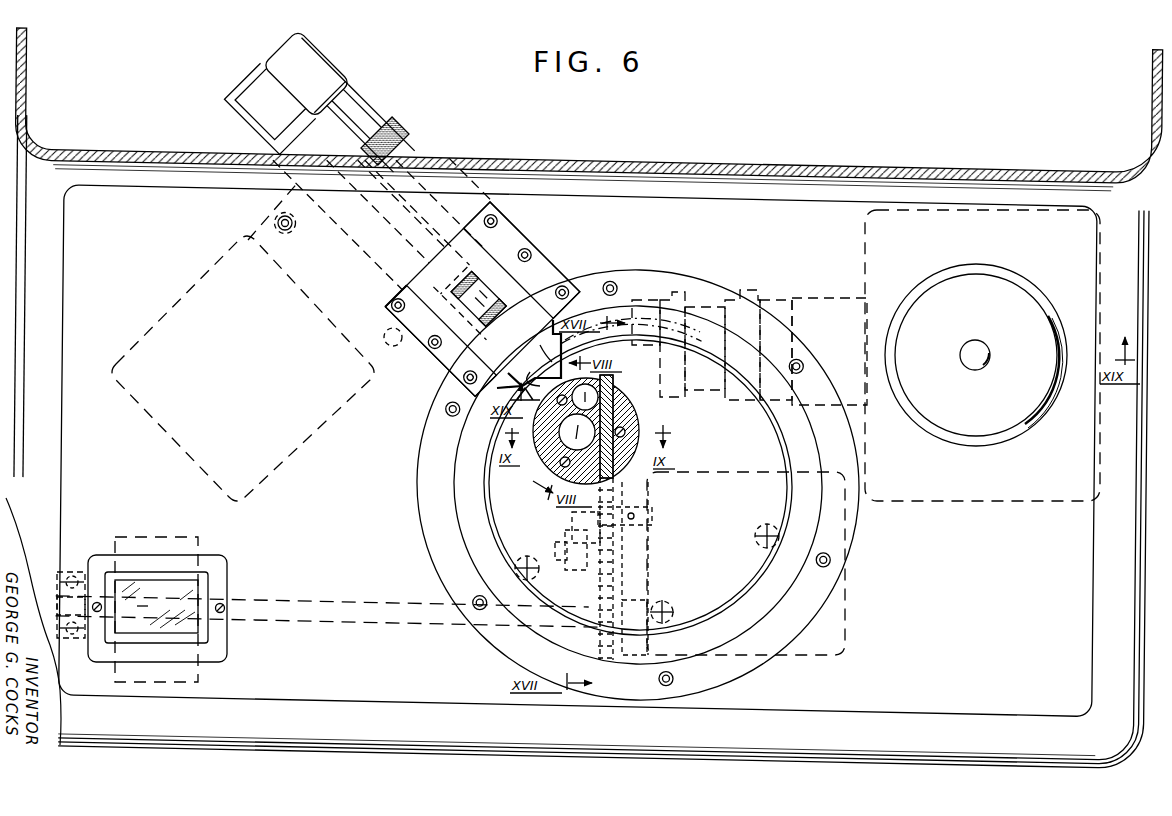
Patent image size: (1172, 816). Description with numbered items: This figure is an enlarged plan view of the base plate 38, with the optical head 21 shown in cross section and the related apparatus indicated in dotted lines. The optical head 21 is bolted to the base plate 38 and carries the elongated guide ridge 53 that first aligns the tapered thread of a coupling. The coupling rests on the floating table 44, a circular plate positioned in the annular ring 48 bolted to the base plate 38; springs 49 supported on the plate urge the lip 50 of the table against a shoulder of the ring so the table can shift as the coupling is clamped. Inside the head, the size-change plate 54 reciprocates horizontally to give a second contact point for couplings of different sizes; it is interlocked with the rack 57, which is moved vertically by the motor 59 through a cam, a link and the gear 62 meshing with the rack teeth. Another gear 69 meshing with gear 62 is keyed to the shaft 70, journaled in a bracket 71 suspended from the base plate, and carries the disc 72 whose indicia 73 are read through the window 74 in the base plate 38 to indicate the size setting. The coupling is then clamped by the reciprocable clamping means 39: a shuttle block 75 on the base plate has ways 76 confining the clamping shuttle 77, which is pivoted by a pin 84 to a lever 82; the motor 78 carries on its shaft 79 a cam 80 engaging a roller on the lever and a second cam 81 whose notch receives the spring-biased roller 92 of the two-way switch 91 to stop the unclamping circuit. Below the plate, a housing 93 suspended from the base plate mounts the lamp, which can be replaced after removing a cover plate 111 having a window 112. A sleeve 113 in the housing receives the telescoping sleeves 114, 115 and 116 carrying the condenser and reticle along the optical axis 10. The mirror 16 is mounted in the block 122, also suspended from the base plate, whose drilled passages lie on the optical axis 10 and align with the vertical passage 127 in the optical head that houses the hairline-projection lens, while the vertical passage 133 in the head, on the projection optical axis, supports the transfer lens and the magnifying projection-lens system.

The optical axis 10 is at (945, 352).
The mirror 16 is at (664, 334).
The optical head 21 is at (625, 472).
The base plate 38 is at (150, 246).
The clamping means 39 is at (381, 299).
The floating table 44 is at (744, 449).
The annular ring 48 is at (770, 606).
The springs 49 is at (524, 557).
The lip 50 is at (800, 456).
The guide ridge 53 is at (540, 380).
The size-change plate 54 is at (604, 384).
The rack 57 is at (614, 418).
The motor 59 is at (847, 617).
The gear 62 is at (617, 561).
The gear 69 is at (598, 588).
The shaft 70 is at (351, 603).
The bracket 71 is at (78, 647).
The disc 72 is at (148, 540).
The indicia 73 is at (182, 592).
The window 74 is at (192, 625).
The shuttle block 75 is at (551, 267).
The ways 76 is at (518, 230).
The clamping shuttle 77 is at (518, 352).
The motor 78 is at (186, 301).
The shaft 79 is at (461, 165).
The cam 80 is at (353, 157).
The second cam 81 is at (418, 160).
The lever 82 is at (503, 311).
The pin 84 is at (458, 315).
The two-way switch 91 is at (322, 52).
The spring-biased roller 92 is at (378, 128).
The housing 93 is at (965, 499).
The cover plate 111 is at (992, 425).
The window 112 is at (978, 346).
The sleeve 113 is at (820, 297).
The telescoping sleeve 114 is at (750, 290).
The telescoping sleeve 115 is at (707, 307).
The telescoping sleeve 116 is at (665, 300).
The block 122 is at (632, 300).
The vertical passage 127 is at (541, 351).
The vertical passage 133 is at (540, 467).